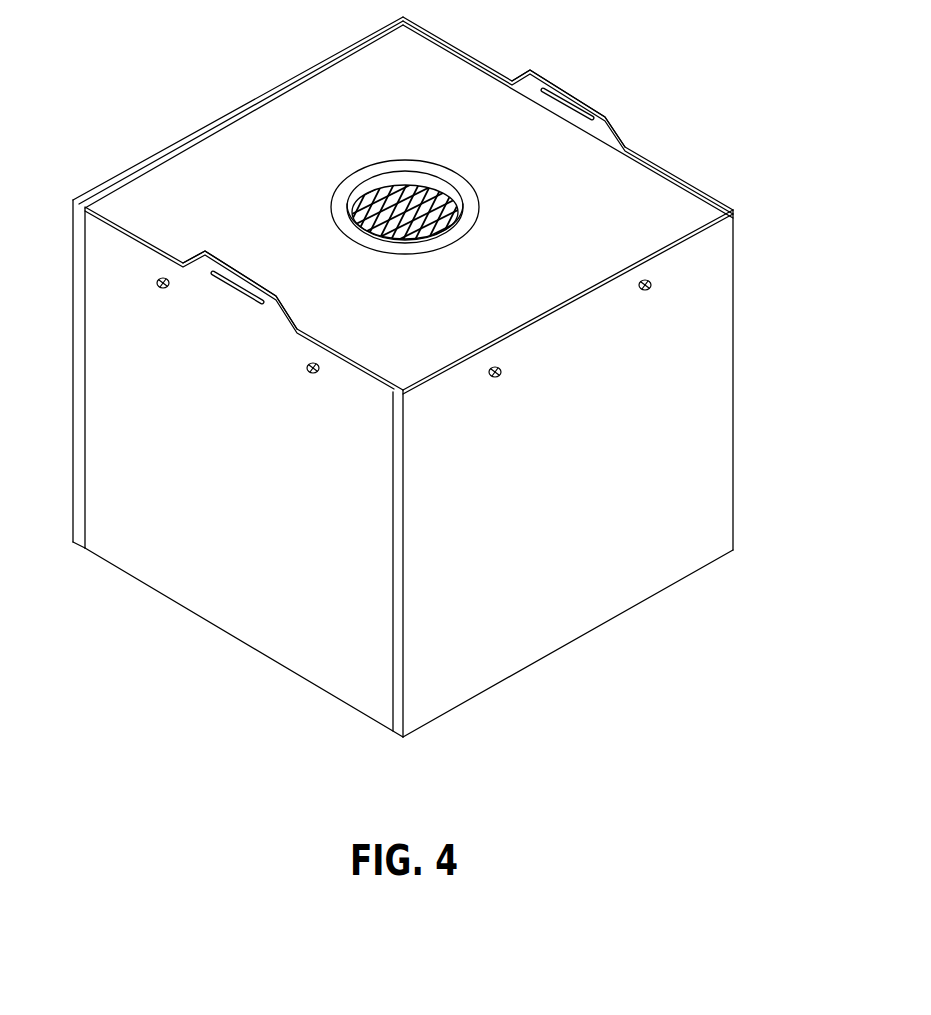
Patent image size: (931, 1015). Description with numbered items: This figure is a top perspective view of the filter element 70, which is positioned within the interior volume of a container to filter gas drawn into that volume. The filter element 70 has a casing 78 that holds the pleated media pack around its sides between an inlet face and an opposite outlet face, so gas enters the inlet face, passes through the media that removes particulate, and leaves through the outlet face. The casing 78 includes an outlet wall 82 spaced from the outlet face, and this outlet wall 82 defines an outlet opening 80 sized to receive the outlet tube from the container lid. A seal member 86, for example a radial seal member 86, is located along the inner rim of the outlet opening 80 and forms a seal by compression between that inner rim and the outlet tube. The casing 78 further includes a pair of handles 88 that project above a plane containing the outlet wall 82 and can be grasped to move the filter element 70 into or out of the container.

The filter element 70 is at (697, 70).
The casing 78 is at (715, 341).
The outlet wall 82 is at (679, 203).
The outlet opening 80 is at (372, 186).
The seal member 86 is at (448, 236).
The handles 88 is at (243, 282).